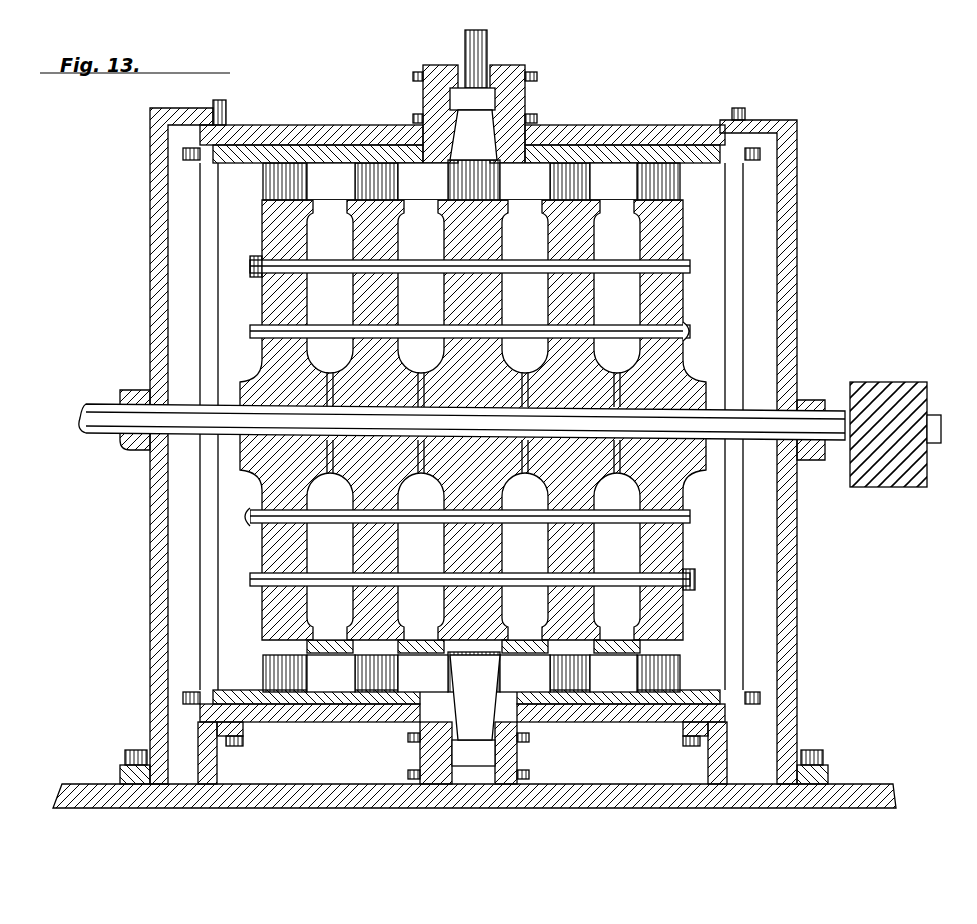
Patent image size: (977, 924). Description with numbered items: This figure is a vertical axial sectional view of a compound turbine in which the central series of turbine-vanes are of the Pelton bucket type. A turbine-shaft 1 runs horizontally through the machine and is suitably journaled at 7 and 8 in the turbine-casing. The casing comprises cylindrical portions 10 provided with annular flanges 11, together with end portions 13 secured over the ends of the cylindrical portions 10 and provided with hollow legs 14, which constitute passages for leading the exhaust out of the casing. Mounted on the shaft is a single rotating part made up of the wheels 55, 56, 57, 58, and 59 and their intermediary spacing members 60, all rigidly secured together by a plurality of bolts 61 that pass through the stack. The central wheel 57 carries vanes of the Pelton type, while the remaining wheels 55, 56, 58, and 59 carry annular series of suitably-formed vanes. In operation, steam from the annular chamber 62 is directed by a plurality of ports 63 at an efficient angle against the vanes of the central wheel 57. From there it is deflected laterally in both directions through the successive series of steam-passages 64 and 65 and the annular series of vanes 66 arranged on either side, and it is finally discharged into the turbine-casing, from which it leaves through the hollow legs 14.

The turbine-shaft 1 is at (112, 408).
The journal 7 is at (140, 392).
The journal 8 is at (810, 404).
The cylindrical portion 10 is at (228, 135).
The annular flange 11 is at (455, 72).
The end portion 13 is at (166, 182).
The hollow leg 14 is at (150, 752).
The wheel 55 is at (270, 298).
The wheel 56 is at (362, 298).
The central wheel 57 is at (450, 298).
The wheel 58 is at (558, 298).
The wheel 59 is at (650, 298).
The spacing member 60 is at (330, 214).
The bolt 61 is at (258, 262).
The annular chamber 62 is at (478, 92).
The port 63 is at (478, 140).
The steam-passage 64 is at (420, 175).
The steam-passage 65 is at (330, 180).
The annular series of vanes 66 is at (272, 175).